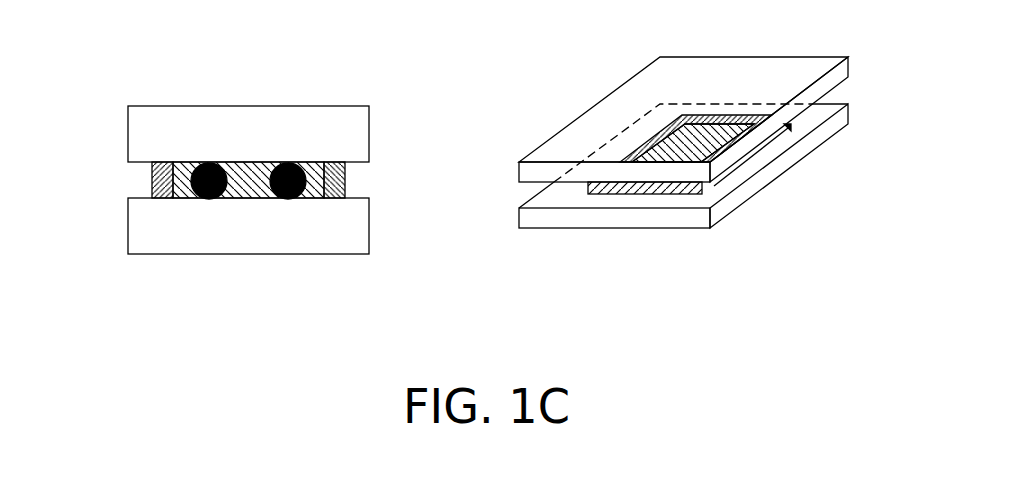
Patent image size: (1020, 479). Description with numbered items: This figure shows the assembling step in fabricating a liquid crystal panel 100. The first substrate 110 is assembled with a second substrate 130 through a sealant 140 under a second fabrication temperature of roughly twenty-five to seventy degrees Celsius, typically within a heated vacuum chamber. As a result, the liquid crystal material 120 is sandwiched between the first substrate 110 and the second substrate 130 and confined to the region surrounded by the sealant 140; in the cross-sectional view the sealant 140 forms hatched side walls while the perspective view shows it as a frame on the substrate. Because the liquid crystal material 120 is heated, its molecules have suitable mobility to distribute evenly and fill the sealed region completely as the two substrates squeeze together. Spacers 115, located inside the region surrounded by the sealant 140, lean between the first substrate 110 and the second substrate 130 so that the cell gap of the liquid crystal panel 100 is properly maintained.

The liquid crystal panel 100 is at (415, 326).
The first substrate 110 is at (360, 233).
The spacers 115 is at (209, 198).
The liquid crystal material 120 is at (165, 178).
The second substrate 130 is at (360, 119).
The sealant 140 is at (335, 182).